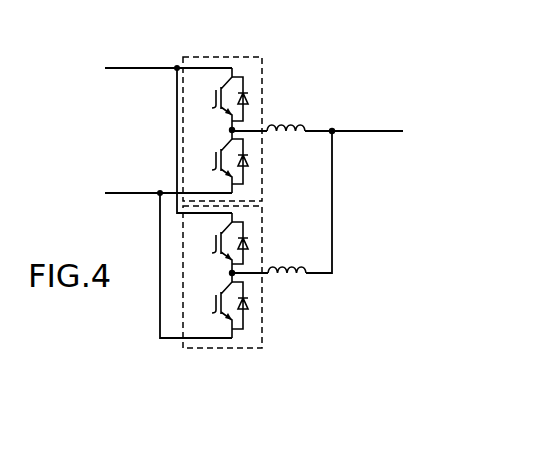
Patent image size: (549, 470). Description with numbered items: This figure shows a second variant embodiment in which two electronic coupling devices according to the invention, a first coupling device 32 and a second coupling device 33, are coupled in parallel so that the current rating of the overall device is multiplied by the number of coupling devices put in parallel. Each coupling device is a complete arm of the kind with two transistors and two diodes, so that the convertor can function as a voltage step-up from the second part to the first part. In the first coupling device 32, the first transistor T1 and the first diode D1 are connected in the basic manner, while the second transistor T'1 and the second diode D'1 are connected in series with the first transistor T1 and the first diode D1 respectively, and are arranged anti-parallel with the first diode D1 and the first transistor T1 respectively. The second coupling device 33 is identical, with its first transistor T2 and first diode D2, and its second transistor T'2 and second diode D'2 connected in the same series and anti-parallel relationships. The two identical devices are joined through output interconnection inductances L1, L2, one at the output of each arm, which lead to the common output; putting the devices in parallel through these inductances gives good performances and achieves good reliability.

The coupling device 32 is at (226, 57).
The coupling device 33 is at (238, 348).
The first transistor T1 is at (209, 99).
The second transistor T'1 is at (209, 161).
The first transistor T2 is at (209, 243).
The second transistor T'2 is at (209, 305).
The second diode D'1 is at (261, 99).
The first diode D1 is at (259, 161).
The second diode D'2 is at (261, 243).
The first diode D2 is at (259, 305).
The output interconnection inductance L1 is at (291, 118).
The output interconnection inductance L2 is at (293, 260).